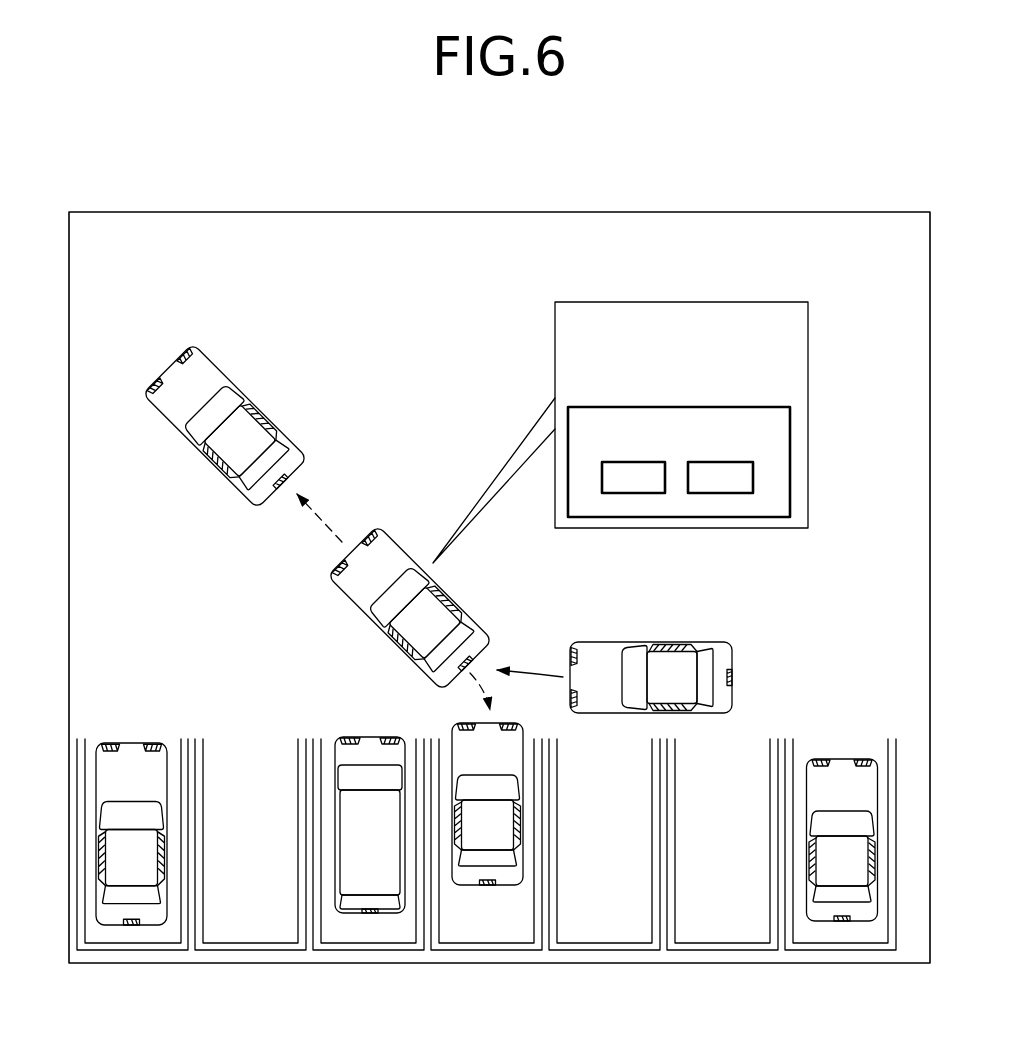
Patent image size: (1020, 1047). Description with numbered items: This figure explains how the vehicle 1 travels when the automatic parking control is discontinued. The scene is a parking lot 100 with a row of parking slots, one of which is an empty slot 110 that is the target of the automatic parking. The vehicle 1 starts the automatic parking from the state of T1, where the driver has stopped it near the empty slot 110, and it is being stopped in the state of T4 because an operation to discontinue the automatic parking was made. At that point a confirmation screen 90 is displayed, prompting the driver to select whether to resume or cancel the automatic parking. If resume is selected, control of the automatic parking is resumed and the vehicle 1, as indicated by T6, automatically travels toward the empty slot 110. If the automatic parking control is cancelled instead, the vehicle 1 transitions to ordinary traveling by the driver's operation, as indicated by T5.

The vehicle 1 is at (461, 595).
The confirmation screen 90 is at (675, 407).
The parking lot 100 is at (478, 210).
The empty slot 110 is at (498, 928).
The state of T1 is at (714, 629).
The state of T4 is at (398, 519).
The state of T5 is at (232, 350).
The state of T6 is at (533, 722).